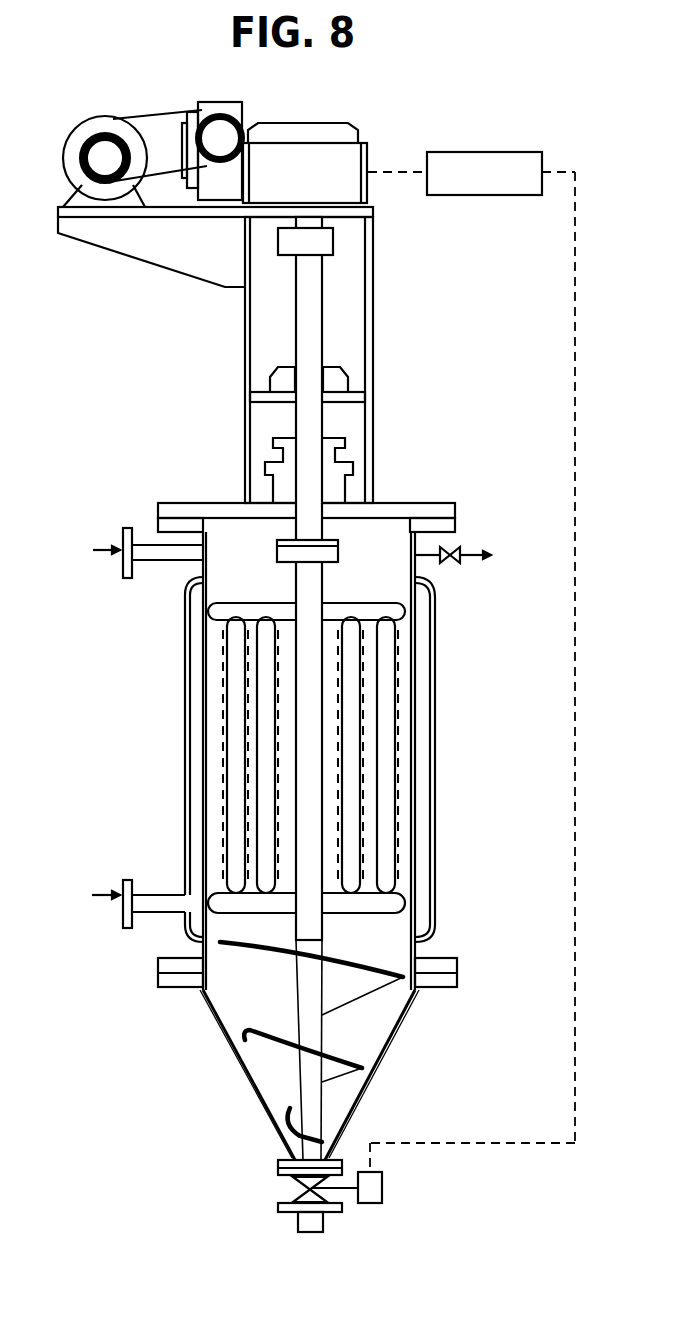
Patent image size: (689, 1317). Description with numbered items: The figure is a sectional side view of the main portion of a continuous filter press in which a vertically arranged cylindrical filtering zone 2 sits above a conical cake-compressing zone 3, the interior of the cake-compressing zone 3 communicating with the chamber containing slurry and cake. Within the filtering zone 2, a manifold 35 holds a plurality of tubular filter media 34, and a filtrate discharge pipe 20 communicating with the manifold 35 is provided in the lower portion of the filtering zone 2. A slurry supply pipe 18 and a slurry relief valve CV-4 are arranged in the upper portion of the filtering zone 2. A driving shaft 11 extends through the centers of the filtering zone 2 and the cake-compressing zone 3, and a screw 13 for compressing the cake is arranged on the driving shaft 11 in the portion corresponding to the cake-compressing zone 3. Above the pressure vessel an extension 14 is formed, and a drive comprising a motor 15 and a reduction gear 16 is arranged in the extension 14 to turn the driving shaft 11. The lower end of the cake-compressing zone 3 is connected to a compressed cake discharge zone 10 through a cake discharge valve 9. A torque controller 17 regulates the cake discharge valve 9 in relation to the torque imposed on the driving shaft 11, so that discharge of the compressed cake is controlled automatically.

The filtering zone 2 is at (417, 643).
The cake-compressing zone 3 is at (218, 1027).
The cake discharge valve 9 is at (307, 1188).
The compressed cake discharge zone 10 is at (313, 1222).
The driving shaft 11 is at (318, 305).
The screw 13 is at (283, 1040).
The extension 14 is at (370, 358).
The motor 15 is at (105, 120).
The reduction gear 16 is at (242, 112).
The torque controller 17 is at (513, 152).
The slurry supply pipe 18 is at (162, 567).
The filtrate discharge pipe 20 is at (157, 917).
The tubular filter media 34 is at (233, 780).
The manifold 35 is at (208, 611).
The slurry relief valve CV-4 is at (460, 550).